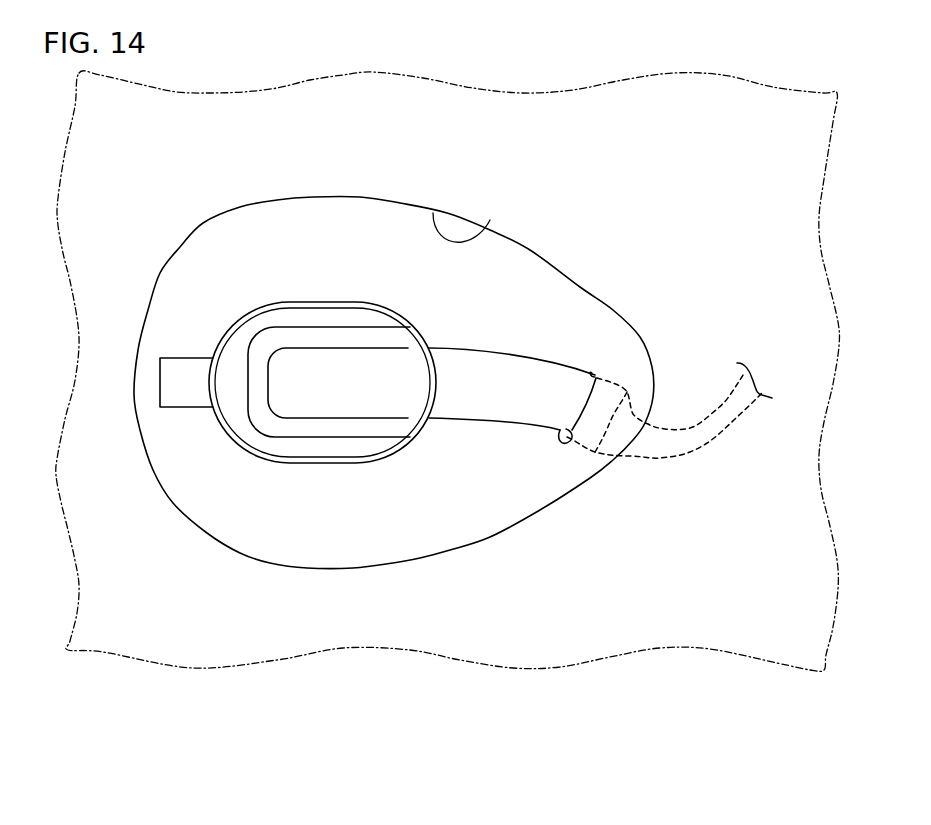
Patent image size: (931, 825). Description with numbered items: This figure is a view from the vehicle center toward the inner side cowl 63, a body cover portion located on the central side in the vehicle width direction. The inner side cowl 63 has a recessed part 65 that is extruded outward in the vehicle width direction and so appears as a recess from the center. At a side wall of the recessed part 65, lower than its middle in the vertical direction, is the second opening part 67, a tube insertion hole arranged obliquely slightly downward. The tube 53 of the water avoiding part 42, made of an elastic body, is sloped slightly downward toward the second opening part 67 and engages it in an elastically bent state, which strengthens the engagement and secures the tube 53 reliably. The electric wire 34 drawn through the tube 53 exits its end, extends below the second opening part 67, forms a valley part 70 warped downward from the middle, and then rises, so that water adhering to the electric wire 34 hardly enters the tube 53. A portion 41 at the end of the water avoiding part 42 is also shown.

The electric wire 34 is at (730, 432).
The terminal portion 41 is at (182, 370).
The water avoiding part 42 is at (285, 318).
The tube 53 is at (508, 360).
The inner side cowl 63 is at (510, 672).
The recessed part 65 is at (483, 223).
The second opening part 67 is at (565, 440).
The valley part 70 is at (675, 424).